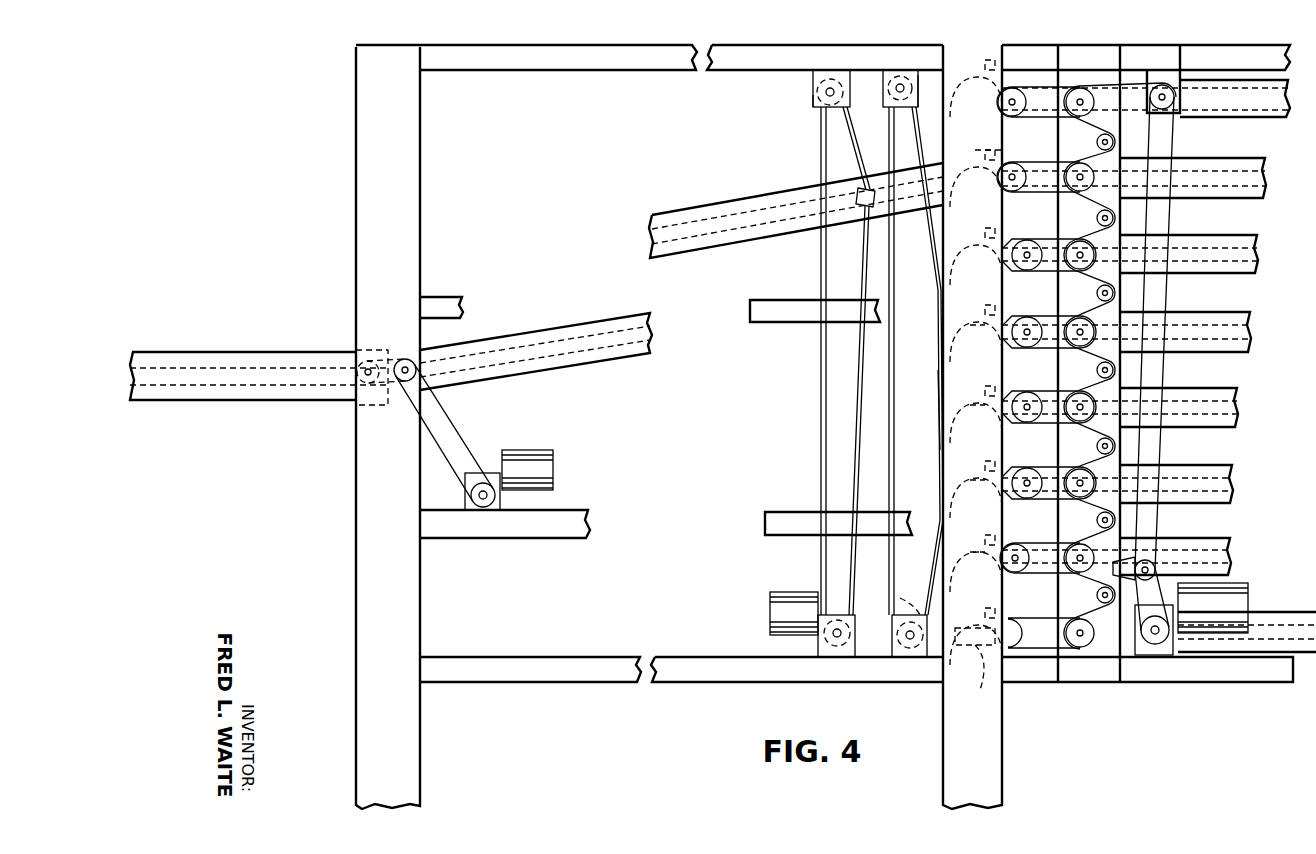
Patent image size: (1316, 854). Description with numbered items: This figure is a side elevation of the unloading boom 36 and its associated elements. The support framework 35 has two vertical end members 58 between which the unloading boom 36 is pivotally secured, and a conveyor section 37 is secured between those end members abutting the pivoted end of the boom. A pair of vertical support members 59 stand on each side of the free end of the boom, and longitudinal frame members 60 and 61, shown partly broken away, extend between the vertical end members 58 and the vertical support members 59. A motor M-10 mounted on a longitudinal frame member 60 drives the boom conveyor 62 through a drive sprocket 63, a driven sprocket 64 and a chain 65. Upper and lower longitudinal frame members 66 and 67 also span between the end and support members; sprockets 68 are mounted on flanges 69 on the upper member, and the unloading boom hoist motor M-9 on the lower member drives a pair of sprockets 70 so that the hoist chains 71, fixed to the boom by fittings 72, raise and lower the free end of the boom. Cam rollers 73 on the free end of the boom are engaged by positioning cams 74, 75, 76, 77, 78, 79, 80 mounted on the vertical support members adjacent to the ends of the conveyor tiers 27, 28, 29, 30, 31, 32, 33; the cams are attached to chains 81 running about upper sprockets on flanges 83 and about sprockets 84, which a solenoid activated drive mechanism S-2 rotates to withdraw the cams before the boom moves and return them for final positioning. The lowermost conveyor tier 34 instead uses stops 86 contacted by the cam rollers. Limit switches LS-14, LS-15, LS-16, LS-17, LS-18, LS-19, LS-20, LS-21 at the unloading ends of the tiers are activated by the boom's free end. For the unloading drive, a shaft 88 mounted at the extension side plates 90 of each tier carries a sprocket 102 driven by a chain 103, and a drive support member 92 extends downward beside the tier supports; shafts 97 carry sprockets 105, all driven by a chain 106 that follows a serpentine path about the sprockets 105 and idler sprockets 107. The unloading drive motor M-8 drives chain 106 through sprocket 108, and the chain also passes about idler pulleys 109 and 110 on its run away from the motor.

The conveyor tier 27 is at (1288, 105).
The conveyor tier 28 is at (1265, 178).
The conveyor tier 29 is at (1240, 235).
The conveyor tier 30 is at (1244, 312).
The conveyor tier 31 is at (1229, 388).
The conveyor tier 32 is at (1225, 465).
The conveyor tier 33 is at (1220, 538).
The lowermost conveyor tier 34 is at (1292, 612).
The support framework 35 is at (1256, 45).
The unloading boom 36 is at (572, 326).
The conveyor section 37 is at (245, 352).
The vertical end members 58 is at (356, 558).
The vertical support members 59 is at (943, 702).
The longitudinal frame member 60 is at (572, 538).
The longitudinal frame member 61 is at (458, 297).
The conveyor 62 is at (545, 358).
The drive sprocket 63 is at (490, 508).
The driven sprocket 64 is at (404, 360).
The chain 65 is at (480, 445).
The upper longitudinal frame member 66 is at (532, 72).
The lower longitudinal frame member 67 is at (512, 657).
The sprockets 68 is at (815, 92).
The flanges 69 is at (813, 100).
The sprockets 70 is at (840, 646).
The unloading boom hoist chains 71 is at (820, 408).
The fittings 72 is at (862, 208).
The cam rollers 73 is at (1005, 147).
The positioning cam 74 is at (913, 140).
The positioning cam 75 is at (932, 230).
The positioning cam 76 is at (938, 290).
The positioning cam 77 is at (964, 325).
The positioning cam 78 is at (964, 405).
The positioning cam 79 is at (964, 480).
The positioning cam 80 is at (964, 552).
The chains 81 is at (895, 435).
The flanges 83 is at (925, 72).
The sprockets 84 is at (896, 596).
The stops 86 is at (975, 670).
The shaft 88 is at (1030, 270).
The extension side plates 90 is at (1040, 240).
The drive support member 92 is at (1110, 682).
The shaft 97 is at (1085, 408).
The sprocket 102 is at (1022, 178).
The chain 103 is at (1050, 117).
The sprockets 105 is at (1095, 180).
The chain 106 is at (1157, 292).
The idler sprockets 107 is at (1097, 294).
The sprocket 108 is at (1163, 644).
The idler pulley 109 is at (1174, 97).
The idler pulley 110 is at (1155, 568).
The unloading drive motor M-8 is at (1245, 585).
The unloading boom hoist motor M-9 is at (770, 612).
The motor M-10 is at (468, 497).
The solenoid activated drive mechanism S-2 is at (893, 637).
The limit switch LS-14 is at (972, 82).
The limit switch LS-15 is at (971, 172).
The limit switch LS-16 is at (972, 250).
The limit switch LS-17 is at (971, 327).
The limit switch LS-18 is at (971, 408).
The limit switch LS-19 is at (971, 483).
The limit switch LS-20 is at (975, 557).
The limit switch LS-21 is at (972, 630).